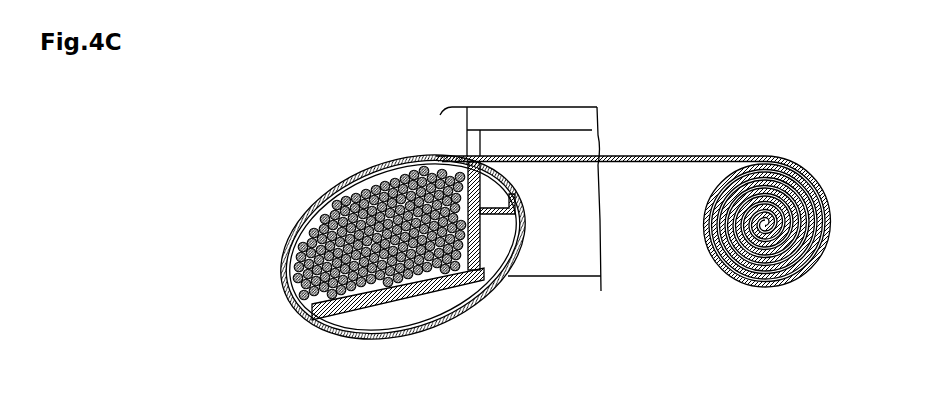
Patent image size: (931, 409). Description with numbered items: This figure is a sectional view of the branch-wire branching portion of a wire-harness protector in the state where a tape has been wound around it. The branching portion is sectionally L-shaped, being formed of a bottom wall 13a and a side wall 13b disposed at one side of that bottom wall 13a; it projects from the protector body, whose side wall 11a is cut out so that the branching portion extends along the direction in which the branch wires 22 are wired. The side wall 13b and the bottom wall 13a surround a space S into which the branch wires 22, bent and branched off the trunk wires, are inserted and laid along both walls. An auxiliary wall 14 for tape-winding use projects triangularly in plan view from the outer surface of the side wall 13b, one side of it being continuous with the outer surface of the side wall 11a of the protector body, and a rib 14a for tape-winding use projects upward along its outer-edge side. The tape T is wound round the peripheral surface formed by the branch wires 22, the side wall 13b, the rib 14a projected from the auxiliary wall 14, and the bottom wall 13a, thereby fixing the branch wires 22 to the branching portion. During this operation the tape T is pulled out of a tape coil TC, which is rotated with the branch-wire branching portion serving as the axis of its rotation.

The side wall of the protector body 11a is at (577, 263).
The bottom wall 13a is at (397, 303).
The side wall 13b is at (443, 157).
The auxiliary wall for tape-winding use 14 is at (495, 216).
The rib for tape-winding use 14a is at (514, 195).
The branch wires 22 is at (300, 265).
The space S is at (453, 303).
The tape T is at (637, 151).
The tape coil TC is at (806, 271).